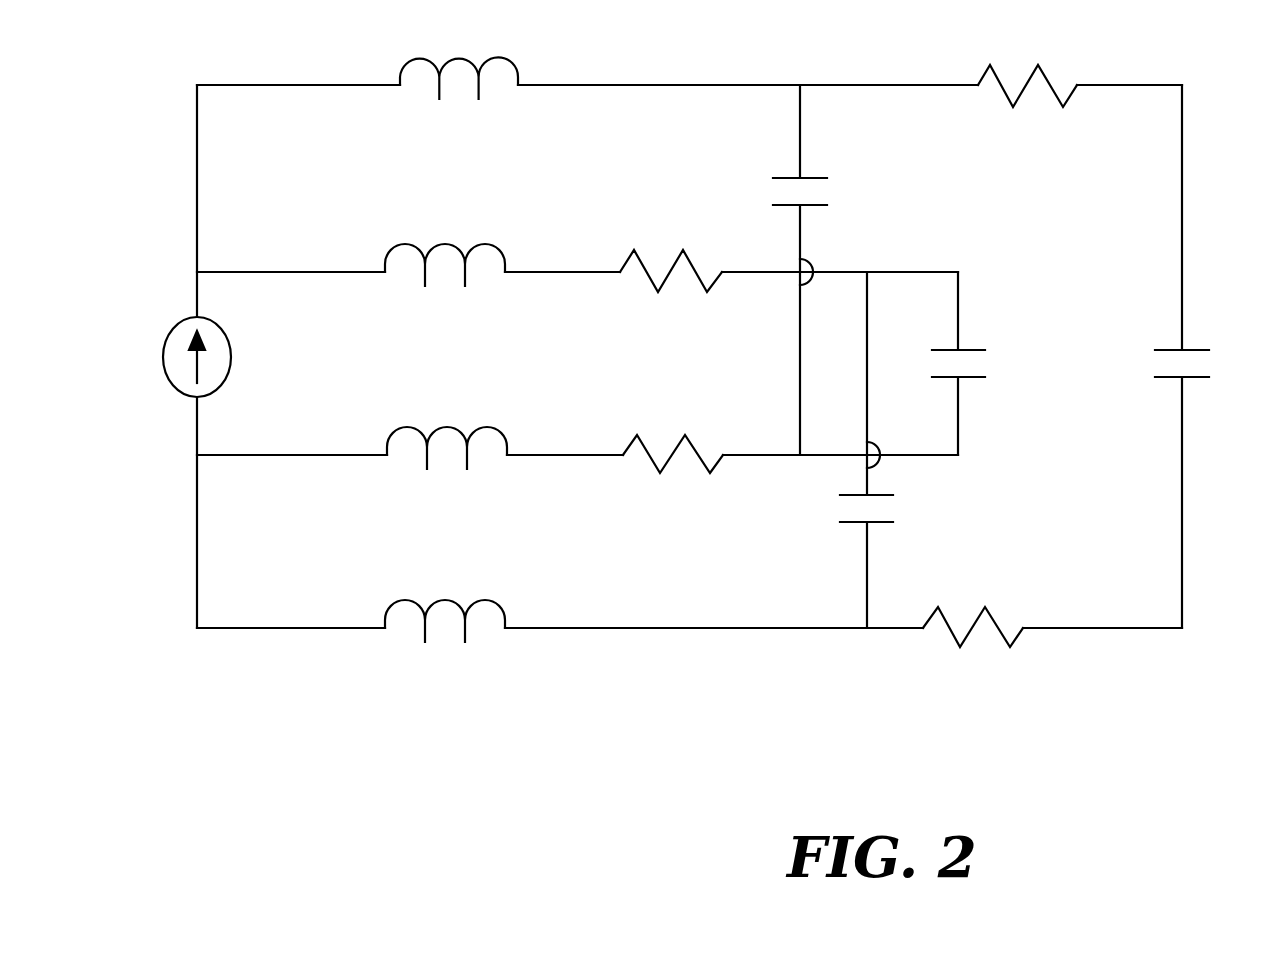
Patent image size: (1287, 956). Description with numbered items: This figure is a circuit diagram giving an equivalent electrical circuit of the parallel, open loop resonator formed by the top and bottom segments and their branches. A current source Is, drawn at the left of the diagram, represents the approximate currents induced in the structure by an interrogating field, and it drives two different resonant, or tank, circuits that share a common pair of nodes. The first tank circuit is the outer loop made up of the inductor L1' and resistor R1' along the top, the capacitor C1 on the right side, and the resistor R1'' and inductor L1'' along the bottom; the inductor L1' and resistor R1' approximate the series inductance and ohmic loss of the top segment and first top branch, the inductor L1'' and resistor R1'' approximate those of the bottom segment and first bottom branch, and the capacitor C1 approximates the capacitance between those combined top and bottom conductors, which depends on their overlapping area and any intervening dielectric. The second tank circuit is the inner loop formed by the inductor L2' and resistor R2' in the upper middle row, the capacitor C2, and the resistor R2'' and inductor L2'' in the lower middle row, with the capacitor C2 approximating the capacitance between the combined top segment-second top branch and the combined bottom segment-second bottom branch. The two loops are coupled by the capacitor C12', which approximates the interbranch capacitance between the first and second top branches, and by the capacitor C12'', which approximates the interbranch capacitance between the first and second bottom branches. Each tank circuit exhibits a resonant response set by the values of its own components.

The current source Is is at (182, 357).
The inductor L1' is at (459, 50).
The inductor L2' is at (445, 236).
The inductor L2'' is at (447, 419).
The inductor L1'' is at (445, 599).
The resistor R2' is at (671, 245).
The resistor R2'' is at (673, 421).
The resistor R1' is at (1027, 67).
The resistor R1'' is at (973, 602).
The capacitor C12' is at (835, 270).
The capacitor C12'' is at (838, 450).
The capacitor C2 is at (983, 363).
The capacitor C1 is at (1219, 355).